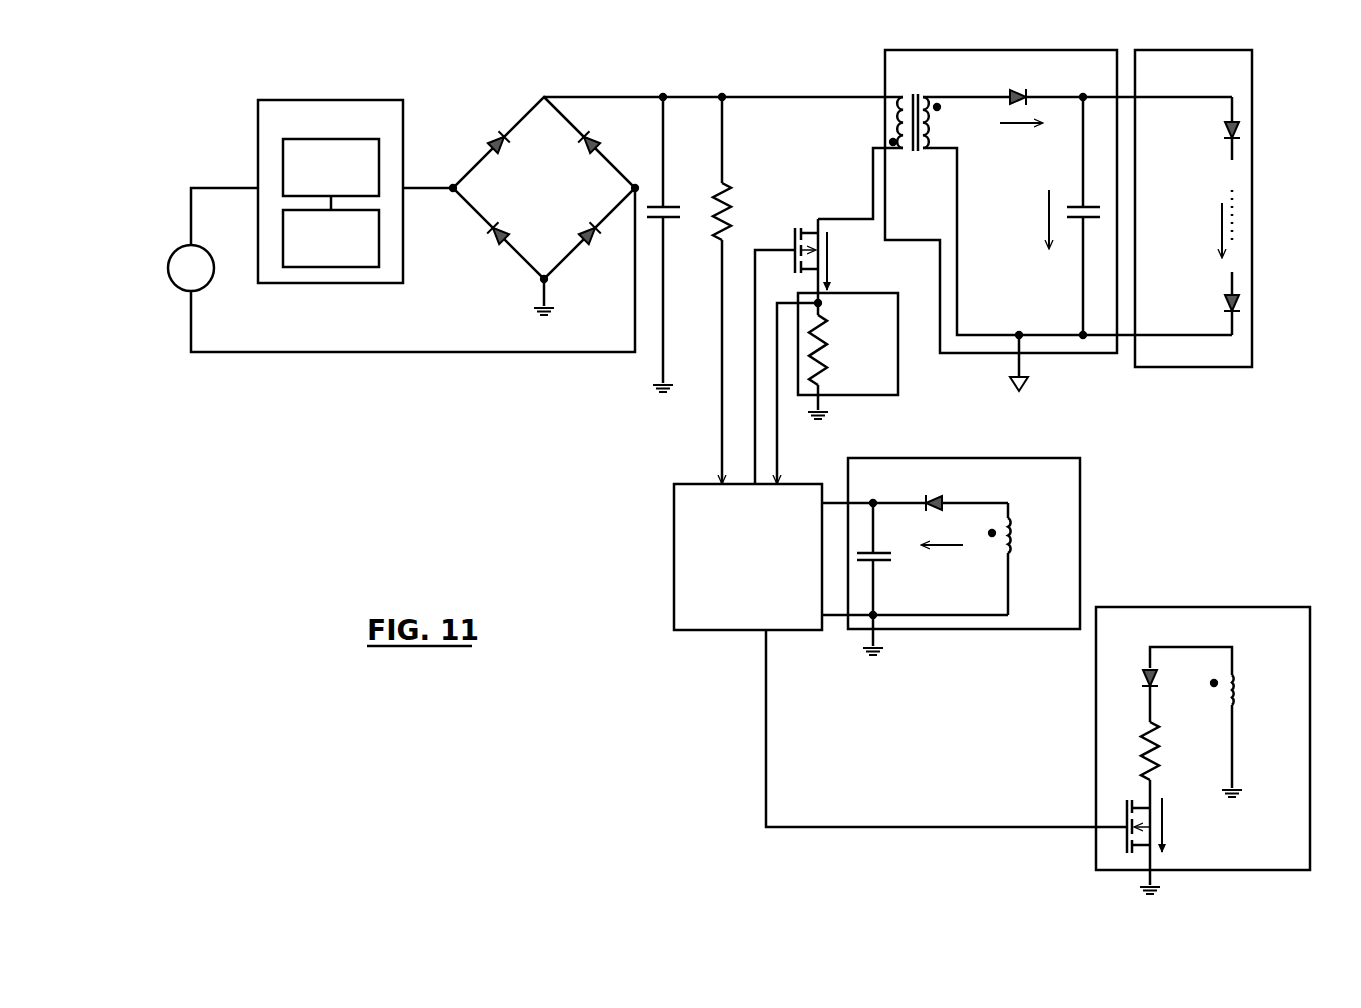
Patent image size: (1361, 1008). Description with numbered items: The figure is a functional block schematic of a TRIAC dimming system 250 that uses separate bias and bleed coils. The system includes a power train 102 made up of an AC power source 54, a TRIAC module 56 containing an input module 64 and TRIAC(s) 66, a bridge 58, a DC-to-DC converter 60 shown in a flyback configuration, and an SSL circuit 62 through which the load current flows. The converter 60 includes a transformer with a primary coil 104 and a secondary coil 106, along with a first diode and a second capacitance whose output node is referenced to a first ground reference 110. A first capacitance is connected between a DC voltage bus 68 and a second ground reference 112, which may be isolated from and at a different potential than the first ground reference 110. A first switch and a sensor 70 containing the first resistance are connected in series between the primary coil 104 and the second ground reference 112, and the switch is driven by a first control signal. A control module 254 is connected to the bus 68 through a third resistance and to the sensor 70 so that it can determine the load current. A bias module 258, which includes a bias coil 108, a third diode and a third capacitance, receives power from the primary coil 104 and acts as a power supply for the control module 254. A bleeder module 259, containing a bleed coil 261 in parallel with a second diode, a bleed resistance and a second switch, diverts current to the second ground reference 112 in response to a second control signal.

The TRIAC dimming system 250 is at (250, 58).
The AC power source 54 is at (186, 247).
The TRIAC module 56 is at (328, 100).
The input module 64 is at (283, 155).
The TRIAC(s) 66 is at (330, 268).
The bridge 58 is at (516, 83).
The DC voltage bus 68 is at (636, 97).
The second ground reference 112 is at (655, 386).
The sensor 70 is at (898, 345).
The DC-to-DC converter 60 is at (885, 72).
The primary coil 104 is at (903, 150).
The secondary coil 106 is at (950, 152).
The first ground reference 110 is at (1026, 386).
The power train 102 is at (1266, 78).
The SSL circuit 62 is at (1197, 367).
The control module 254 is at (674, 537).
The bias module 258 is at (1055, 458).
The bias coil 108 is at (1016, 540).
The bleeder module 259 is at (1257, 607).
The bleed coil 261 is at (1240, 690).